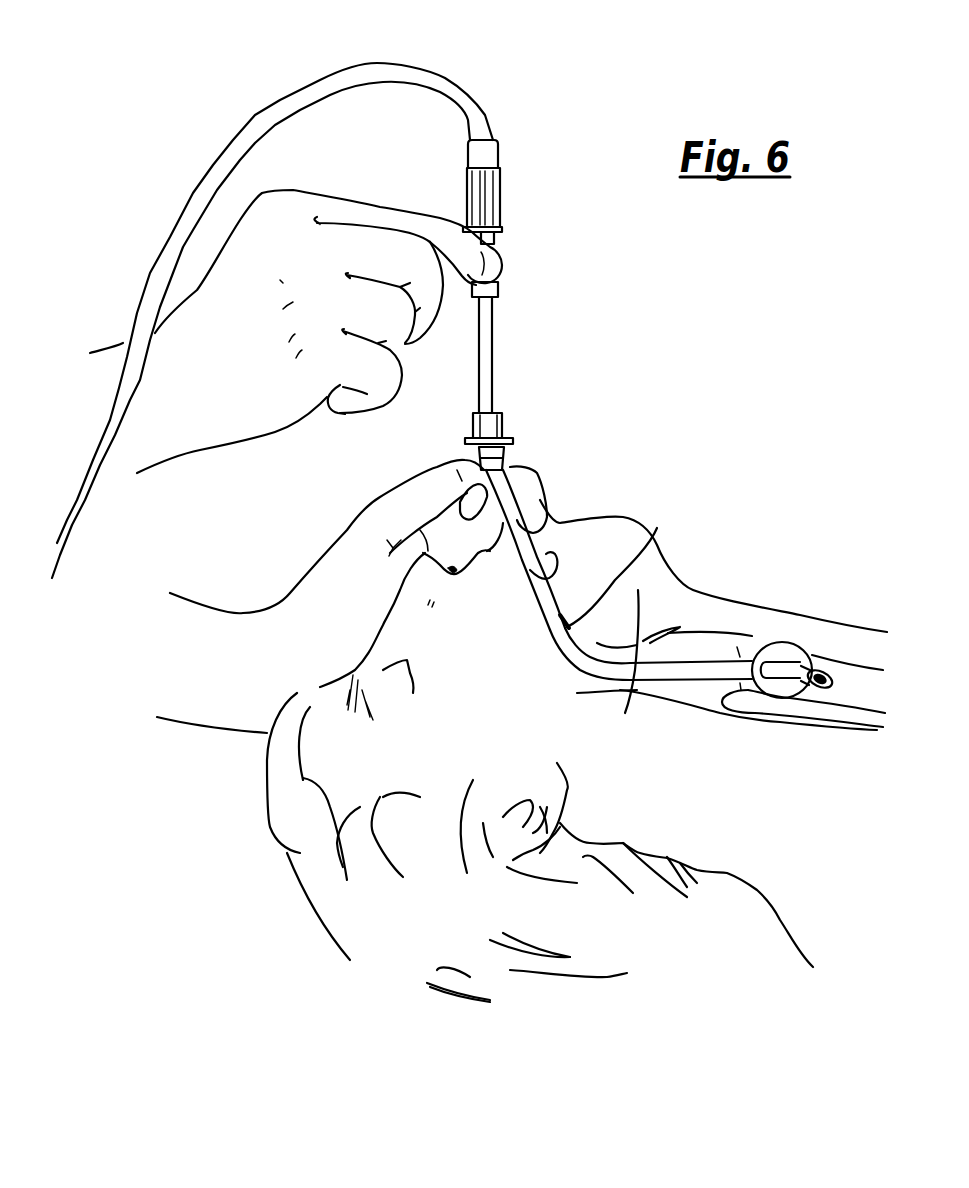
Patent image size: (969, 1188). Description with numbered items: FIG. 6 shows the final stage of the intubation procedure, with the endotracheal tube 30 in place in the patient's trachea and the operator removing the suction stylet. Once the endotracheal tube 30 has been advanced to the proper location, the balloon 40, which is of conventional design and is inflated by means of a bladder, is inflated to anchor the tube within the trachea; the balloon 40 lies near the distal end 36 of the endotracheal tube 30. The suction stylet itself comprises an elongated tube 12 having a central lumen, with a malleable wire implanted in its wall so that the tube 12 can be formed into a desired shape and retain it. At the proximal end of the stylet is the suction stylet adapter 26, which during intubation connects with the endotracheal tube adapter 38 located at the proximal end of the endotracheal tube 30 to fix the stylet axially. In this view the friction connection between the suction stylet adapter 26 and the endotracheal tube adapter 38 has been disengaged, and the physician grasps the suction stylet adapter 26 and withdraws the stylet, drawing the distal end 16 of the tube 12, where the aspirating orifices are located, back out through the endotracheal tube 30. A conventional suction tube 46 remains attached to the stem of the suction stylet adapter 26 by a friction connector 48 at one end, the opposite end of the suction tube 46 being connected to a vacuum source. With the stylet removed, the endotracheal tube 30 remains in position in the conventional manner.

The suction tube 46 is at (423, 68).
The friction connector 48 is at (500, 190).
The suction stylet adapter 26 is at (507, 288).
The elongated tube 12 is at (493, 360).
The endotracheal tube adapter 38 is at (513, 428).
The distal end 16 is at (650, 537).
The endotracheal tube 30 is at (697, 660).
The balloon 40 is at (758, 646).
The distal end 36 is at (838, 684).